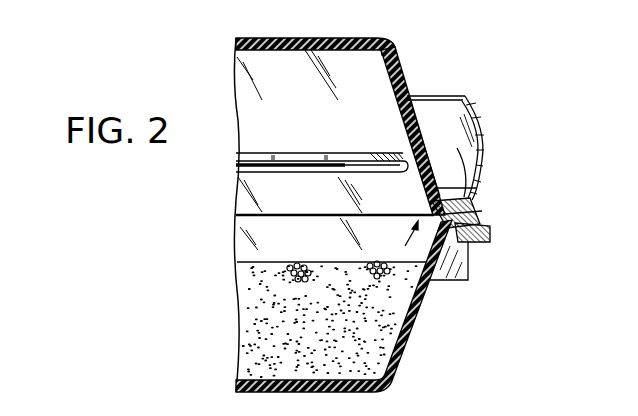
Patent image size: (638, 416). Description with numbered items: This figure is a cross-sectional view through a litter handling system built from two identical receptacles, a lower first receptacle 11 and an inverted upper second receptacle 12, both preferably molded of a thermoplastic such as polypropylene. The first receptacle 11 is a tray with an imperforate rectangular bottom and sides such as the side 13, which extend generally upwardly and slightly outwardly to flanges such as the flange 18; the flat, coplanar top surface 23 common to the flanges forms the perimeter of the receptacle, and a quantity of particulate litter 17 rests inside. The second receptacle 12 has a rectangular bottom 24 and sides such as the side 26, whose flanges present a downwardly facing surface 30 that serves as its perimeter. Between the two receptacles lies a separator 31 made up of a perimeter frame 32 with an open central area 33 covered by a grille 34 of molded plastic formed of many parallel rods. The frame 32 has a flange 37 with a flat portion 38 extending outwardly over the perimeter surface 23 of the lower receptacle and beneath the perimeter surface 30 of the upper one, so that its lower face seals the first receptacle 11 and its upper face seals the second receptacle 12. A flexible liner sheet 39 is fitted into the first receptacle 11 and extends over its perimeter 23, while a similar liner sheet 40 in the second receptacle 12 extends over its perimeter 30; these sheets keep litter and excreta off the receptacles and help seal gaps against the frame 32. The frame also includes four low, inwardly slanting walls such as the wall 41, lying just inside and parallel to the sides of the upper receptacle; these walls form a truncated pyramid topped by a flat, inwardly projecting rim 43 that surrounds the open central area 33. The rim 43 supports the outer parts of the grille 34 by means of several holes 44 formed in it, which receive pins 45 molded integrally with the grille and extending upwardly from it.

The first receptacle 11 is at (428, 294).
The second receptacle 12 is at (393, 44).
The side 13 is at (401, 352).
The particulate litter 17 is at (283, 264).
The flange 18 is at (490, 227).
The top surface 23 is at (419, 221).
The bottom 24 is at (355, 38).
The side 26 is at (402, 97).
The surface 30 is at (470, 212).
The separator 31 is at (367, 154).
The perimeter frame 32 is at (452, 163).
The open central area 33 is at (256, 155).
The grille 34 is at (313, 174).
The flange 37 is at (481, 222).
The flat portion 38 is at (450, 195).
The liner sheet 39 is at (469, 280).
The liner sheet 40 is at (388, 78).
The wall 41 is at (413, 187).
The rim 43 is at (418, 127).
The holes 44 is at (387, 155).
The pins 45 is at (391, 155).